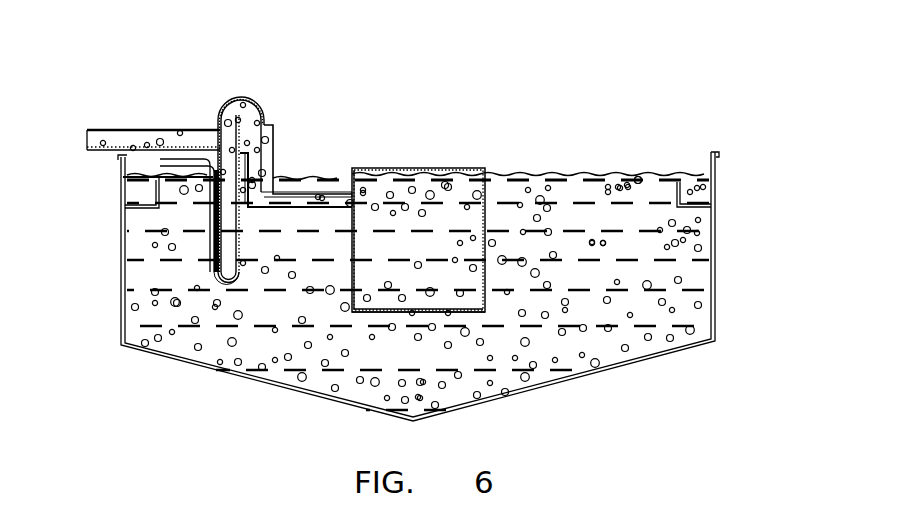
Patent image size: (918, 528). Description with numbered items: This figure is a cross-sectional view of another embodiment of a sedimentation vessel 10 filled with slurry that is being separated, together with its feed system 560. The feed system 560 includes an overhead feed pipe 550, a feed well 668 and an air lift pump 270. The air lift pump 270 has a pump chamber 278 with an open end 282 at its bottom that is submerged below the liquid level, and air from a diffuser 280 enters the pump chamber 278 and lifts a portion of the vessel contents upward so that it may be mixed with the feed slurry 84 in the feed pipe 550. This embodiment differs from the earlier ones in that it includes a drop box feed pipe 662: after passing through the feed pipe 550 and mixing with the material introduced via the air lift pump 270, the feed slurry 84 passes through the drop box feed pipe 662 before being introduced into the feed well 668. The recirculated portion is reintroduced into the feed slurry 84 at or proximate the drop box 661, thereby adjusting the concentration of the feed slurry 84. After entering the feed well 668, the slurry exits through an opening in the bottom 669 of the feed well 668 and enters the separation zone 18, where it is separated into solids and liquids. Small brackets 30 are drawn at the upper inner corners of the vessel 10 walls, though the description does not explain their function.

The sedimentation vessel 10 is at (722, 242).
The separation zone 18 is at (592, 275).
The brackets 30 is at (157, 195).
The feed slurry 84 is at (354, 168).
The air lift pump 270 is at (216, 105).
The pump chamber 278 is at (231, 218).
The diffuser 280 is at (210, 244).
The open end 282 is at (233, 270).
The overhead feed pipe 550 is at (178, 132).
The feed system 560 is at (308, 127).
The drop box 661 is at (264, 152).
The drop box feed pipe 662 is at (270, 171).
The feed well 668 is at (442, 246).
The bottom 669 is at (356, 314).